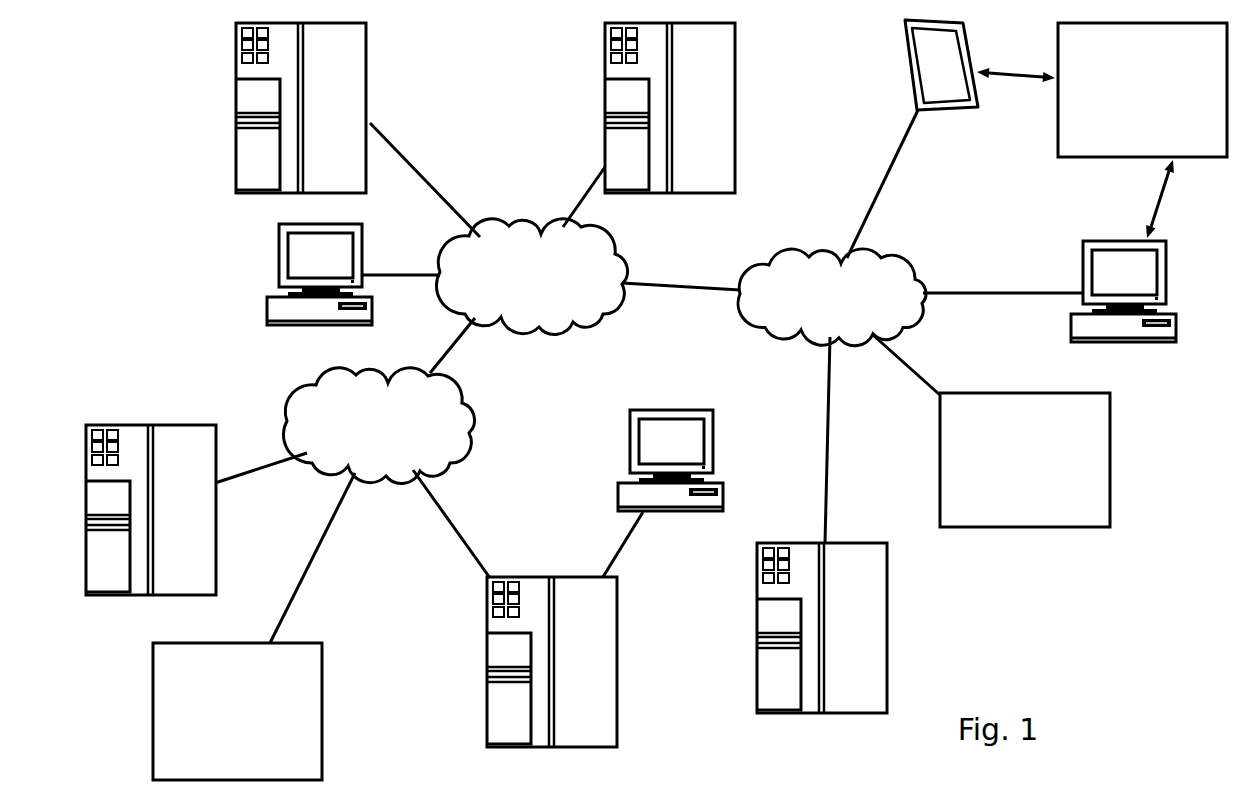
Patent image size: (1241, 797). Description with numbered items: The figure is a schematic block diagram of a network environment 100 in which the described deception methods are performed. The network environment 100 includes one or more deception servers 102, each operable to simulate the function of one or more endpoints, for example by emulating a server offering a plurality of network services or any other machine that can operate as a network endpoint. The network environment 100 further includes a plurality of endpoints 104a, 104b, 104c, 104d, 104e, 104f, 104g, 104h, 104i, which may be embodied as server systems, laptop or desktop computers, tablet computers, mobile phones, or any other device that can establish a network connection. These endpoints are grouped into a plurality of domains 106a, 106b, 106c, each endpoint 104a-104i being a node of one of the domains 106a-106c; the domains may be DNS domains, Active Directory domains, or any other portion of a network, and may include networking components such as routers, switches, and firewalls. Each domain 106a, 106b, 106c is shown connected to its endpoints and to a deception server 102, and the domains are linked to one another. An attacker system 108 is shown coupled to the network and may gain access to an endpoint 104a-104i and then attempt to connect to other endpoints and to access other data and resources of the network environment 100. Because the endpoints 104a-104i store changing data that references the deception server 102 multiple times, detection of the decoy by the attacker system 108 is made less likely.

The network environment 100 is at (124, 86).
The deception server 102 is at (287, 738).
The endpoint 104a is at (163, 500).
The endpoint 104b is at (564, 650).
The endpoint 104c is at (697, 450).
The endpoint 104d is at (294, 262).
The endpoint 104e is at (312, 96).
The endpoint 104f is at (685, 100).
The endpoint 104g is at (833, 618).
The endpoint 104h is at (943, 110).
The endpoint 104i is at (1147, 280).
The domain 106a is at (446, 436).
The domain 106b is at (597, 286).
The domain 106c is at (898, 306).
The attacker system 108 is at (1194, 116).